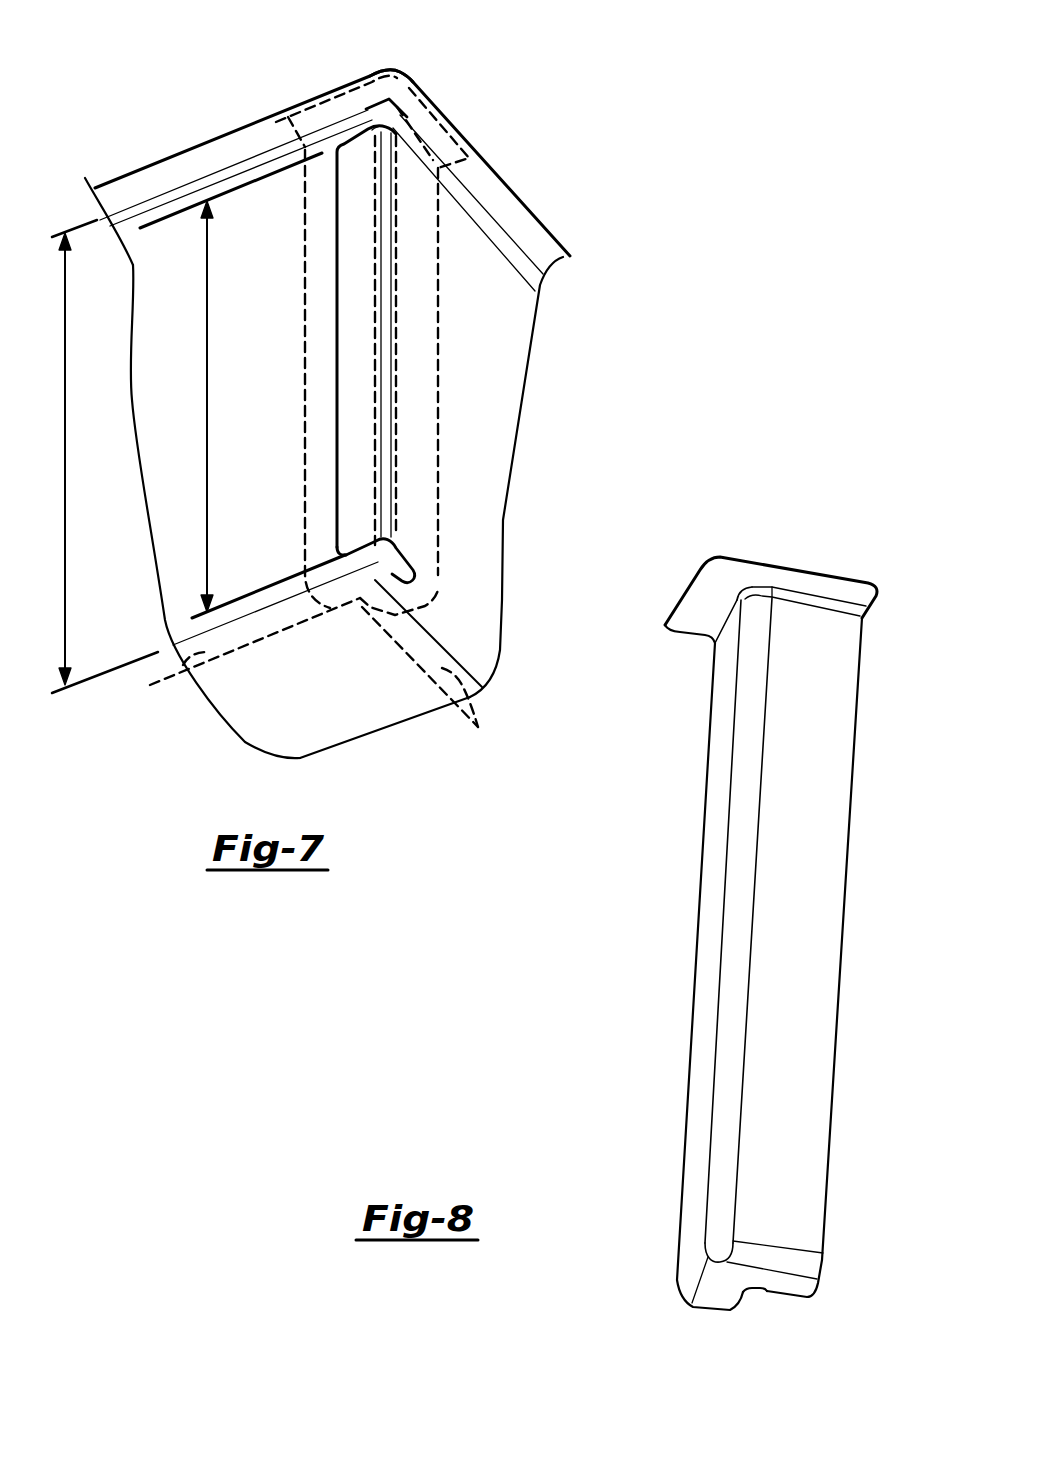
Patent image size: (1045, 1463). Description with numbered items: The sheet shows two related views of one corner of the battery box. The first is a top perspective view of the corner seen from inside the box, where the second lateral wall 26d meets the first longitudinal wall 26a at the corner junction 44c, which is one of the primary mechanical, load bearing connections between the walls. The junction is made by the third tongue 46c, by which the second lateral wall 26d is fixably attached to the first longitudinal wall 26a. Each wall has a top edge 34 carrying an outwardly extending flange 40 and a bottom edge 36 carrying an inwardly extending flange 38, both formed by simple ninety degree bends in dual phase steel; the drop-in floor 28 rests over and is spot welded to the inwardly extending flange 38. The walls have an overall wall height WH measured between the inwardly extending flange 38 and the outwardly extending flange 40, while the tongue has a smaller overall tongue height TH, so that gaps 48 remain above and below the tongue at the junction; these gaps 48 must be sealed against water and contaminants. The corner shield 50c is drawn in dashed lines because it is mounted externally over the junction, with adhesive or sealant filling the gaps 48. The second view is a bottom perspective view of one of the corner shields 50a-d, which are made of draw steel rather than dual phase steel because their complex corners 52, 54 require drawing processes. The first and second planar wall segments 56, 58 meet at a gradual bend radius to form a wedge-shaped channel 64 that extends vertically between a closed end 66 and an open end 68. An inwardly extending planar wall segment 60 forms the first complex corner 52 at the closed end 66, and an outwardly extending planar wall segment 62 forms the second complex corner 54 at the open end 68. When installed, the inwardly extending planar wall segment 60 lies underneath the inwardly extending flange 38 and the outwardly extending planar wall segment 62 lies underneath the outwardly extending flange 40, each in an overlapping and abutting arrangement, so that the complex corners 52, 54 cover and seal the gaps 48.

In FIG. 7, the first longitudinal wall 26a is at (484, 442).
In FIG. 7, the second lateral wall 26d is at (178, 524).
In FIG. 7, the floor 28 is at (340, 708).
In FIG. 7, the top edge 34 is at (92, 203).
In FIG. 7, the bottom edge 36 is at (160, 643).
In FIG. 7, the inwardly extending flange 38 is at (183, 665).
In FIG. 7, the outwardly extending flange 40 is at (200, 158).
In FIG. 7, the corner junction 44c is at (402, 56).
In FIG. 7, the third tongue 46c is at (358, 315).
In FIG. 7, the gaps 48 is at (413, 96).
In FIG. 7, the corner shield 50c is at (418, 332).
In FIG. 8, the corner shields 50a-d is at (730, 926).
In FIG. 8, the first complex corner 52 is at (706, 1243).
In FIG. 8, the second complex corner 54 is at (762, 608).
In FIG. 8, the first planar wall segment 56 is at (810, 832).
In FIG. 8, the second planar wall segment 58 is at (720, 774).
In FIG. 7, the inwardly extending planar wall segment 60 is at (440, 582).
In FIG. 8, the inwardly extending planar wall segment 60 is at (730, 1297).
In FIG. 7, the outwardly extending planar wall segment 62 is at (320, 108).
In FIG. 8, the outwardly extending planar wall segment 62 is at (738, 578).
In FIG. 7, the wedge-shaped channel 64 is at (392, 238).
In FIG. 8, the closed end 66 is at (778, 1313).
In FIG. 8, the open end 68 is at (840, 545).
In FIG. 7, the tongue height TH is at (207, 406).
In FIG. 7, the wall height WH is at (72, 452).